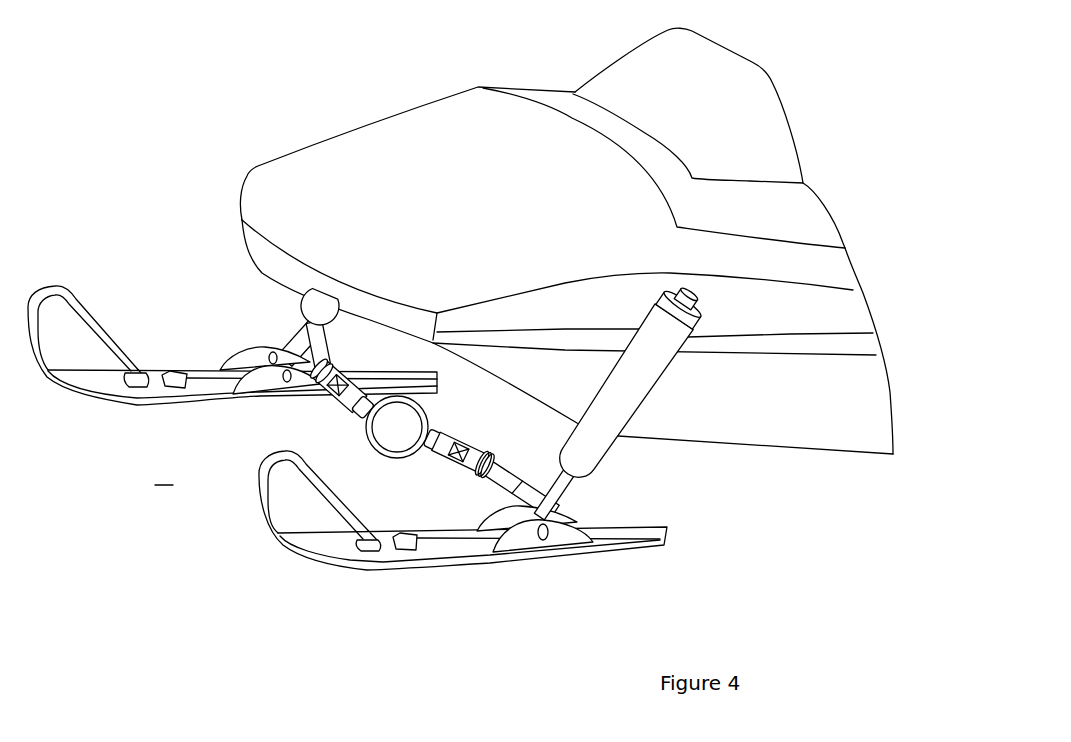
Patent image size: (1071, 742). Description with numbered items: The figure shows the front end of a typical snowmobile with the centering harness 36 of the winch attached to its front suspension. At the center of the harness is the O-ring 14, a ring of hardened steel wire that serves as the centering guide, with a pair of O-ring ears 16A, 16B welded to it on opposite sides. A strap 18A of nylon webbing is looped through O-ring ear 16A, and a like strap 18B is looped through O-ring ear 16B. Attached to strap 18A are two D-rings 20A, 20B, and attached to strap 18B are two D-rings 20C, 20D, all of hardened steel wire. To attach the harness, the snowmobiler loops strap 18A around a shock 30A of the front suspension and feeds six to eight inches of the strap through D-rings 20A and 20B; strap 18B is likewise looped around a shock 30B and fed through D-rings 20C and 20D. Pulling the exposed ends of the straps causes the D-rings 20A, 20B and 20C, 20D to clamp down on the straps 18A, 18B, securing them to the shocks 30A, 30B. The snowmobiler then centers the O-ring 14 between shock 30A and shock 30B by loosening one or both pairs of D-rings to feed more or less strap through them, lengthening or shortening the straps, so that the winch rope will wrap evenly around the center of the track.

The O-ring 14 is at (384, 455).
The centering harness 36 is at (436, 402).
The O-ring ear 16A is at (423, 462).
The O-ring ear 16B is at (358, 418).
The strap 18A is at (553, 505).
The strap 18B is at (323, 348).
The D-ring 20A is at (485, 460).
The D-ring 20B is at (492, 467).
The D-ring 20C is at (319, 384).
The D-ring 20D is at (318, 372).
The shock 30A is at (603, 437).
The shock 30B is at (305, 305).